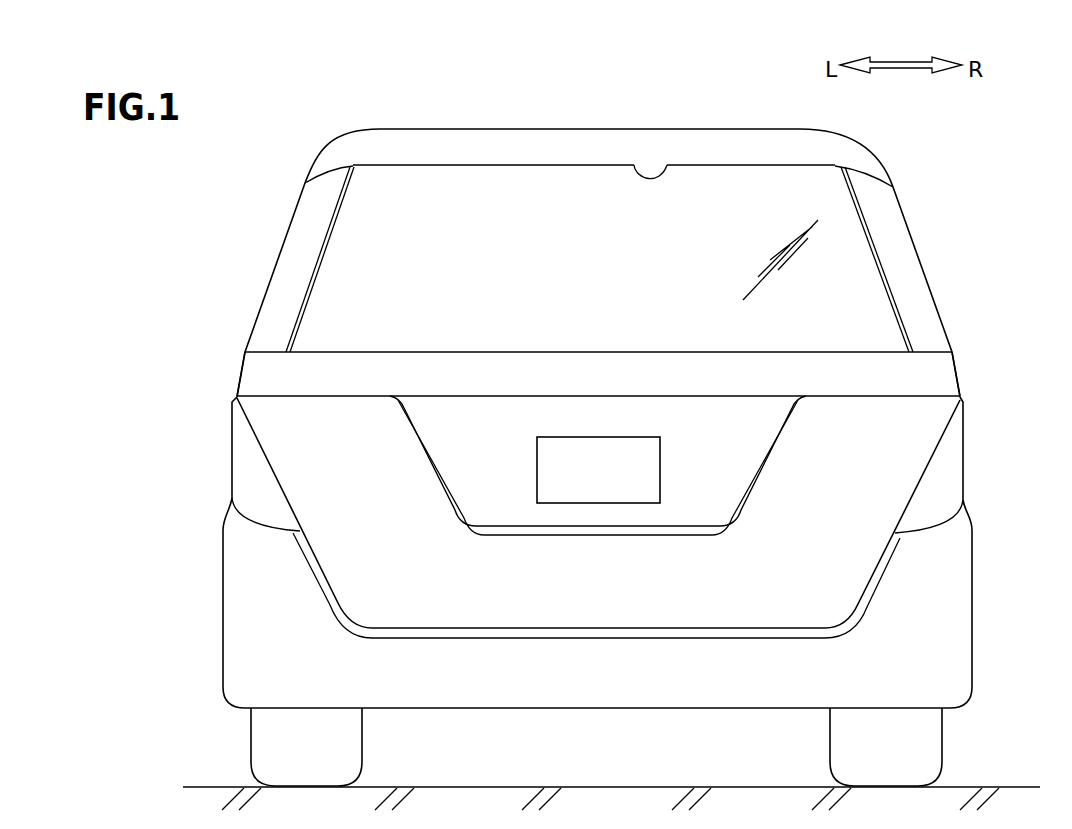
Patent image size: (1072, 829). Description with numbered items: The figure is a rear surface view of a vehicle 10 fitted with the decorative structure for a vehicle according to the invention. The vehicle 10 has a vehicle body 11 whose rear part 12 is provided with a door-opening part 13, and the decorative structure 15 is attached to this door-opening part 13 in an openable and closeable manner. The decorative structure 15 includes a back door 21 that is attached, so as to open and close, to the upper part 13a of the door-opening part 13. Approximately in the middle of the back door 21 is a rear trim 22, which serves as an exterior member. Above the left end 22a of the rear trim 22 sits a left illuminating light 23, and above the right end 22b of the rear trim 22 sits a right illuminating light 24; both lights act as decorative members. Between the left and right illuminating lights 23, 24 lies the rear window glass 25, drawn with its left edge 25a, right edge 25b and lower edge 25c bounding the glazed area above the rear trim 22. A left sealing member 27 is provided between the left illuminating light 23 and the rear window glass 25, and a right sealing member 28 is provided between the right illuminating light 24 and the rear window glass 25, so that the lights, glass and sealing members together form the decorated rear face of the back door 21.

The vehicle 10 is at (323, 100).
The vehicle body 11 is at (460, 127).
The rear part 12 is at (575, 140).
The door-opening part 13 is at (919, 471).
The upper part 13a is at (665, 165).
The decorative structure 15 is at (271, 258).
The back door 21 is at (262, 455).
The rear trim 22 is at (515, 383).
The left end 22a is at (253, 373).
The right end 22b is at (945, 378).
The left illuminating light 23 is at (275, 282).
The right illuminating light 24 is at (914, 287).
The rear window glass 25 is at (840, 235).
The left edge of rear window glass 25a is at (320, 267).
The right edge of rear window glass 25b is at (857, 206).
The lower edge of rear window glass 25c is at (328, 344).
The left sealing member 27 is at (332, 225).
The right sealing member 28 is at (878, 258).